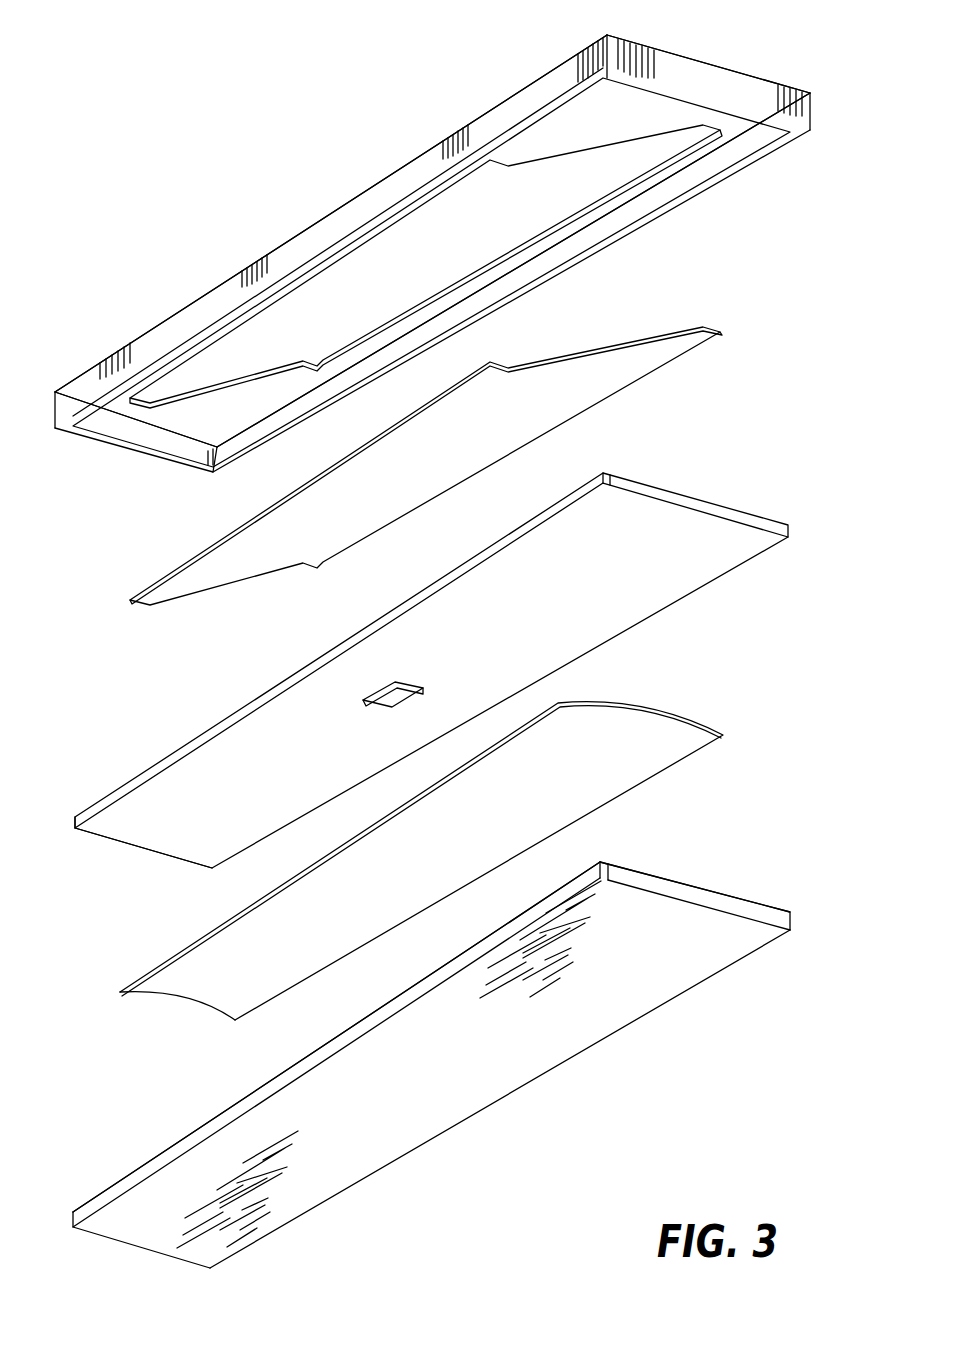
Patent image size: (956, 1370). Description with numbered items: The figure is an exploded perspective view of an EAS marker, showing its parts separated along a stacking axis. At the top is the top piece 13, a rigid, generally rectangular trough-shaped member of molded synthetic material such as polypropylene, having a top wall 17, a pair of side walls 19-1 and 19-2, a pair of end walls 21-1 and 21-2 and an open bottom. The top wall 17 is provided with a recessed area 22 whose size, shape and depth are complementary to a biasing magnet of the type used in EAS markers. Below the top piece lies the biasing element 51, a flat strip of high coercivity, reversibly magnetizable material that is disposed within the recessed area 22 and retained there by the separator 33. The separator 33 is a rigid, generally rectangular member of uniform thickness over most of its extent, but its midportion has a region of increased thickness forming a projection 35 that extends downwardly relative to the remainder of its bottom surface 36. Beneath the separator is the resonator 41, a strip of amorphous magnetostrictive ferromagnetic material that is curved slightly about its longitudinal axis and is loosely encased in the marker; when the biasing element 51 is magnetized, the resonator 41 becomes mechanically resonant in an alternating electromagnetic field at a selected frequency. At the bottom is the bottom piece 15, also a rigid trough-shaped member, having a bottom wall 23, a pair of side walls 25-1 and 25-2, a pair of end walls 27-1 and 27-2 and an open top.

The top piece 13 is at (433, 272).
The bottom piece 15 is at (421, 1065).
The top wall 17 is at (433, 259).
The side wall 19-1 is at (380, 188).
The side wall 19-2 is at (733, 162).
The end wall 21-1 is at (157, 437).
The end wall 21-2 is at (740, 88).
The recessed area 22 is at (583, 182).
The bottom wall 23 is at (598, 1026).
The side wall 25-1 is at (160, 1160).
The side wall 25-2 is at (714, 970).
The end wall 27-1 is at (122, 1245).
The end wall 27-2 is at (678, 887).
The separator 33 is at (438, 687).
The projection 35 is at (386, 702).
The bottom surface 36 is at (134, 828).
The resonator 41 is at (650, 749).
The biasing element 51 is at (668, 346).